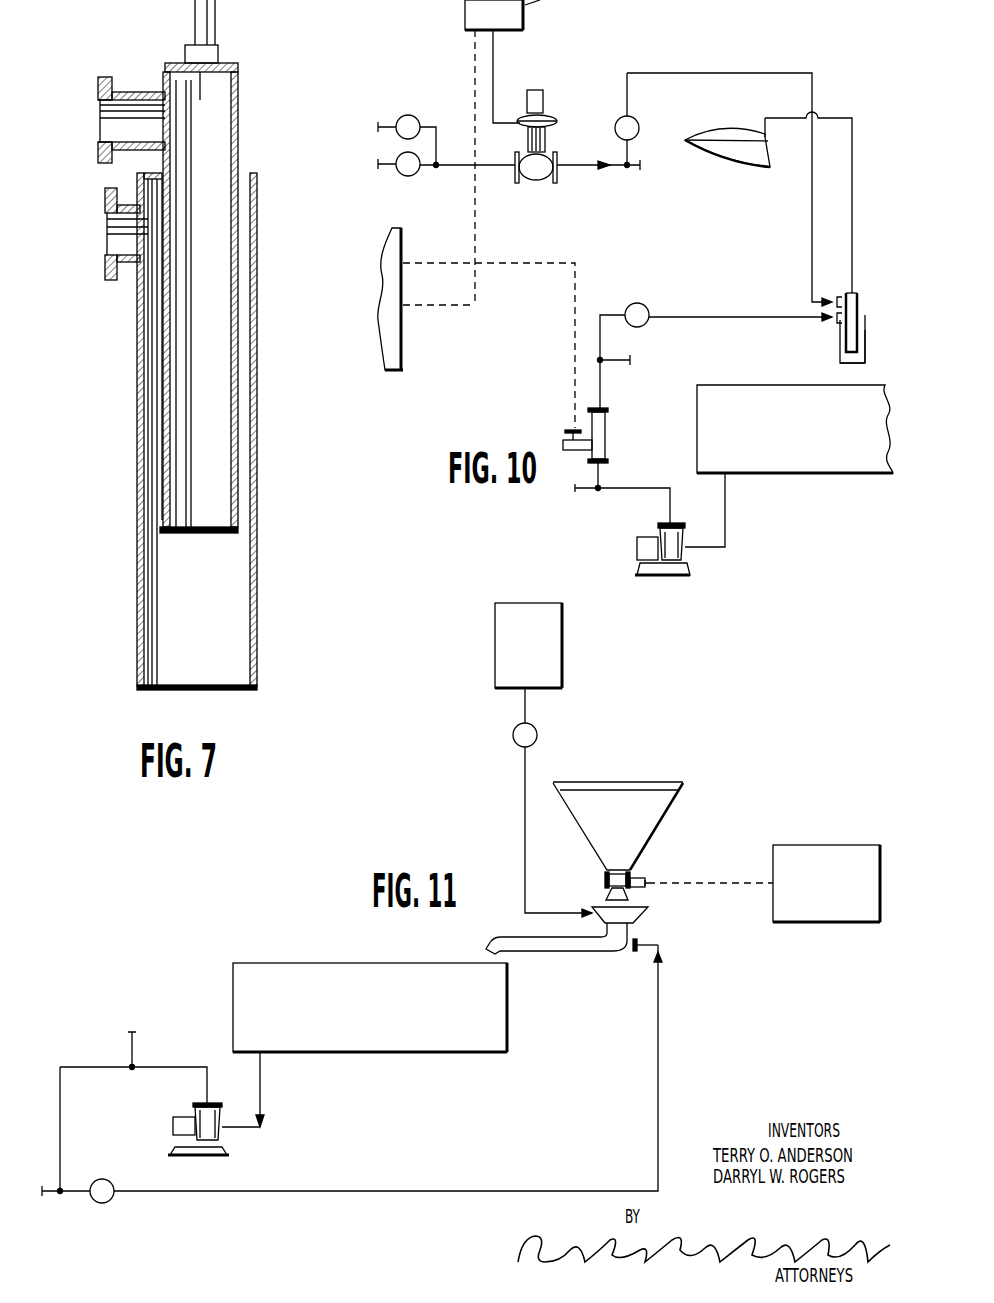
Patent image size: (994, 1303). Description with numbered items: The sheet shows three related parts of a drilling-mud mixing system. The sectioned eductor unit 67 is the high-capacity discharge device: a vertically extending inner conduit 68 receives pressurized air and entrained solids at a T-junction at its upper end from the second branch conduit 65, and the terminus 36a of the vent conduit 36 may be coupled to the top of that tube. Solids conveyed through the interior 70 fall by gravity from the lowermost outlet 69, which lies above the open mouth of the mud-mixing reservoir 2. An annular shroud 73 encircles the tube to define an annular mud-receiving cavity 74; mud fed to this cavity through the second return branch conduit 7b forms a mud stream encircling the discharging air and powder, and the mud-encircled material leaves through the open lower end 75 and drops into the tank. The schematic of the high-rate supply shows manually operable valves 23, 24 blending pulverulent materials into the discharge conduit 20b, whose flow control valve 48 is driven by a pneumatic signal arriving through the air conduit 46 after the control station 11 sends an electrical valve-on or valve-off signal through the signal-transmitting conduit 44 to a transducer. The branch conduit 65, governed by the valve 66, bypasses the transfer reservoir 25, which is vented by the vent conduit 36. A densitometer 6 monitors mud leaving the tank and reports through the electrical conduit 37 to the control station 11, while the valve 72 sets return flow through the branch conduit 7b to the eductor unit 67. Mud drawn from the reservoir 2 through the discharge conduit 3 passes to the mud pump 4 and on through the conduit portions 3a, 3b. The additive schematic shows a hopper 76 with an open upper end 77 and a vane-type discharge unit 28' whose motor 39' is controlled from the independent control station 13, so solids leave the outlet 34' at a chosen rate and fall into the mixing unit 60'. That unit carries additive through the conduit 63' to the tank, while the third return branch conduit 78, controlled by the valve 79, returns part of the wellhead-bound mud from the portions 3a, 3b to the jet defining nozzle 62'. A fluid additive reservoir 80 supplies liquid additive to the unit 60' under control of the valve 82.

In FIG. 10, the mud-mixing reservoir 2 is at (712, 423).
In FIG. 11, the mud-mixing reservoir 2 is at (365, 970).
In FIG. 10, the discharge conduit 3 is at (726, 513).
In FIG. 11, the discharge conduit 3 is at (262, 1083).
In FIG. 10, the conduit portion 3a is at (614, 488).
In FIG. 11, the conduit portion 3a is at (183, 1067).
In FIG. 11, the conduit portion 3b is at (61, 1105).
In FIG. 10, the mud pump 4 is at (689, 565).
In FIG. 11, the mud pump 4 is at (221, 1140).
In FIG. 10, the densitometer 6 is at (603, 434).
In FIG. 7, the second return branch conduit 7b is at (128, 263).
In FIG. 10, the second return branch conduit 7b is at (738, 316).
In FIG. 10, the control station 11 is at (404, 326).
In FIG. 11, the control station 13 is at (828, 853).
In FIG. 10, the discharge conduit 20b is at (462, 166).
In FIG. 10, the manually operable valve 23 is at (408, 115).
In FIG. 10, the manually operable valve 24 is at (402, 174).
In FIG. 10, the transfer reservoir 25 is at (756, 133).
In FIG. 11, the vane-type discharge unit 28' is at (601, 872).
In FIG. 11, the outlet 34' is at (599, 894).
In FIG. 10, the vent conduit 36 is at (852, 117).
In FIG. 7, the terminus of vent conduit 36a is at (218, 53).
In FIG. 10, the electrical conduit 37 is at (570, 345).
In FIG. 11, the motor 39' is at (701, 872).
In FIG. 10, the signal-transmitting conduit 44 is at (477, 239).
In FIG. 10, the air conduit 46 is at (494, 66).
In FIG. 10, the flow control valve 48 is at (544, 101).
In FIG. 11, the mixing unit 60' is at (635, 912).
In FIG. 11, the jet defining nozzle 62' is at (633, 962).
In FIG. 11, the conduit 63' is at (556, 954).
In FIG. 7, the second branch conduit 65 is at (150, 92).
In FIG. 10, the second branch conduit 65 is at (702, 73).
In FIG. 10, the valve 66 is at (638, 119).
In FIG. 7, the eductor unit 67 is at (238, 173).
In FIG. 10, the eductor unit 67 is at (860, 321).
In FIG. 7, the inner conduit 68 is at (240, 101).
In FIG. 10, the inner conduit 68 is at (856, 296).
In FIG. 7, the lowermost outlet 69 is at (200, 531).
In FIG. 7, the interior of tube 70 is at (220, 315).
In FIG. 10, the valve 72 is at (646, 306).
In FIG. 7, the annular shroud 73 is at (256, 389).
In FIG. 10, the annular shroud 73 is at (866, 340).
In FIG. 7, the annular mud-receiving cavity 74 is at (148, 389).
In FIG. 10, the annular mud-receiving cavity 74 is at (845, 343).
In FIG. 7, the open lower end 75 is at (157, 688).
In FIG. 10, the open lower end 75 is at (857, 364).
In FIG. 11, the hopper 76 is at (645, 820).
In FIG. 11, the open upper end 77 is at (638, 782).
In FIG. 11, the third return branch conduit 78 is at (430, 1190).
In FIG. 11, the manually operable valve 79 is at (119, 1166).
In FIG. 11, the fluid additive reservoir 80 is at (550, 640).
In FIG. 11, the manually operable control valve 82 is at (538, 733).